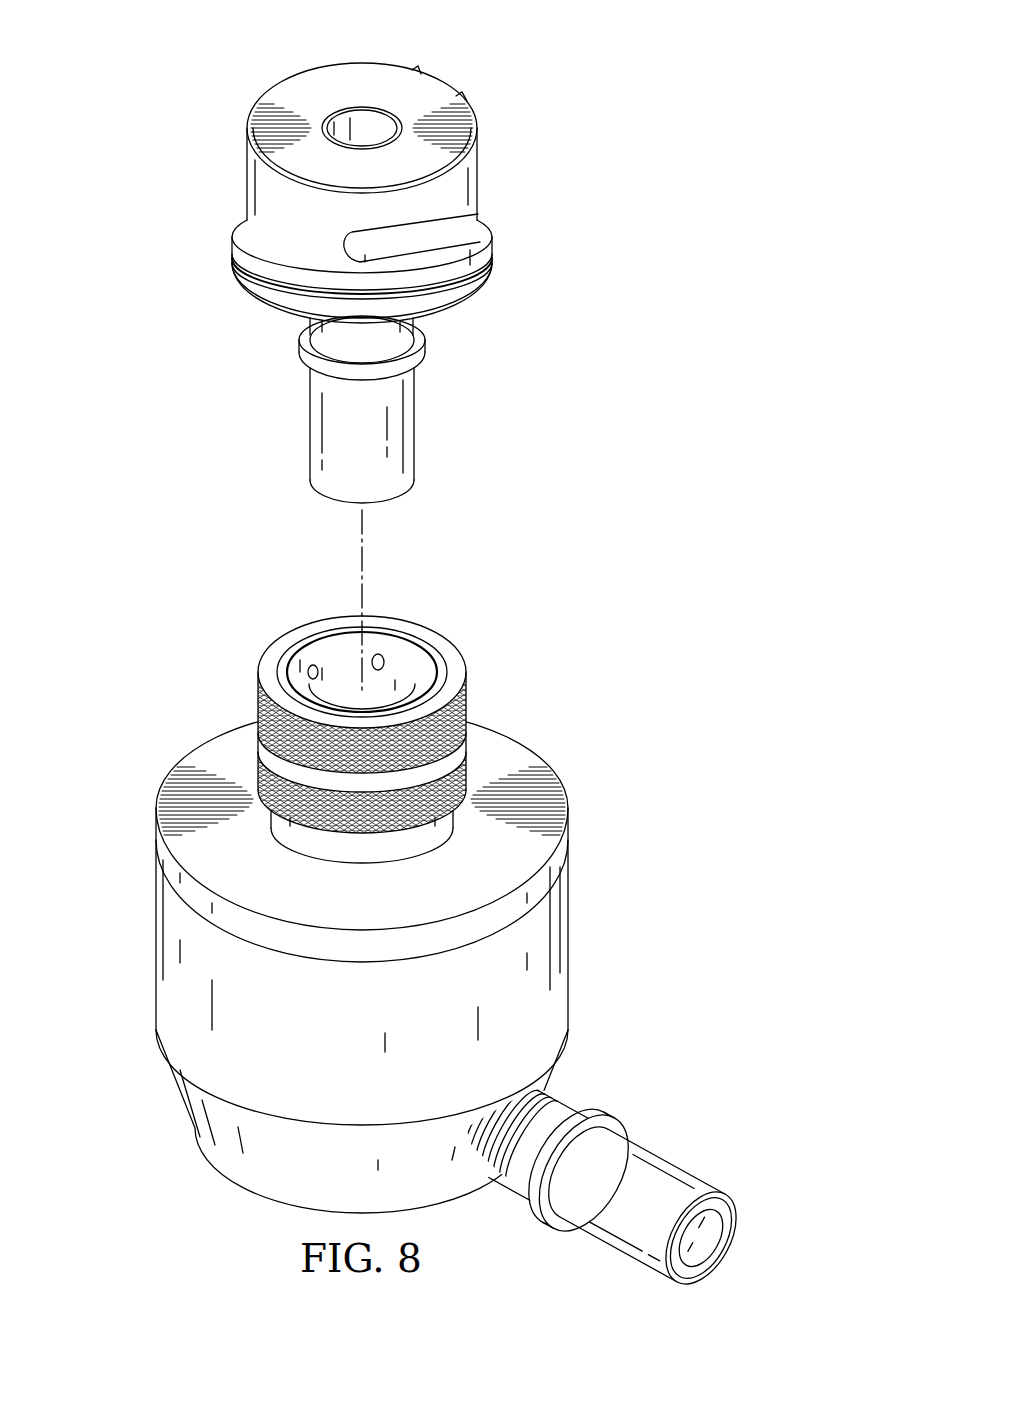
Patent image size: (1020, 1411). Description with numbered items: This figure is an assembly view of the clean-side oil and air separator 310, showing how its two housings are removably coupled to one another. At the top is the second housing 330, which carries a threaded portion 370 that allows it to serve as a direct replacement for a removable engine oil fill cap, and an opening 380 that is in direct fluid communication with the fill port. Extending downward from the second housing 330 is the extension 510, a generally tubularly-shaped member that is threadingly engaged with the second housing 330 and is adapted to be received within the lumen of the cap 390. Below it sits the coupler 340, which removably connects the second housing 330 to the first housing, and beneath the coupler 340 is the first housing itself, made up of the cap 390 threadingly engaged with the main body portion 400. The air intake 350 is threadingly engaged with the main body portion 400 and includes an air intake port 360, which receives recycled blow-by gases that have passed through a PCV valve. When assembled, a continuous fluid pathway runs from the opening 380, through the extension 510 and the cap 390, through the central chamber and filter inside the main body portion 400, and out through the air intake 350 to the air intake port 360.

The clean-side oil and air separator 310 is at (664, 103).
The second housing 330 is at (247, 164).
The coupler 340 is at (482, 640).
The air intake 350 is at (623, 1250).
The air intake port 360 is at (707, 1250).
The threaded portion 370 is at (418, 225).
The opening 380 is at (378, 120).
The cap 390 is at (213, 727).
The main body portion 400 is at (157, 926).
The extension 510 is at (310, 417).